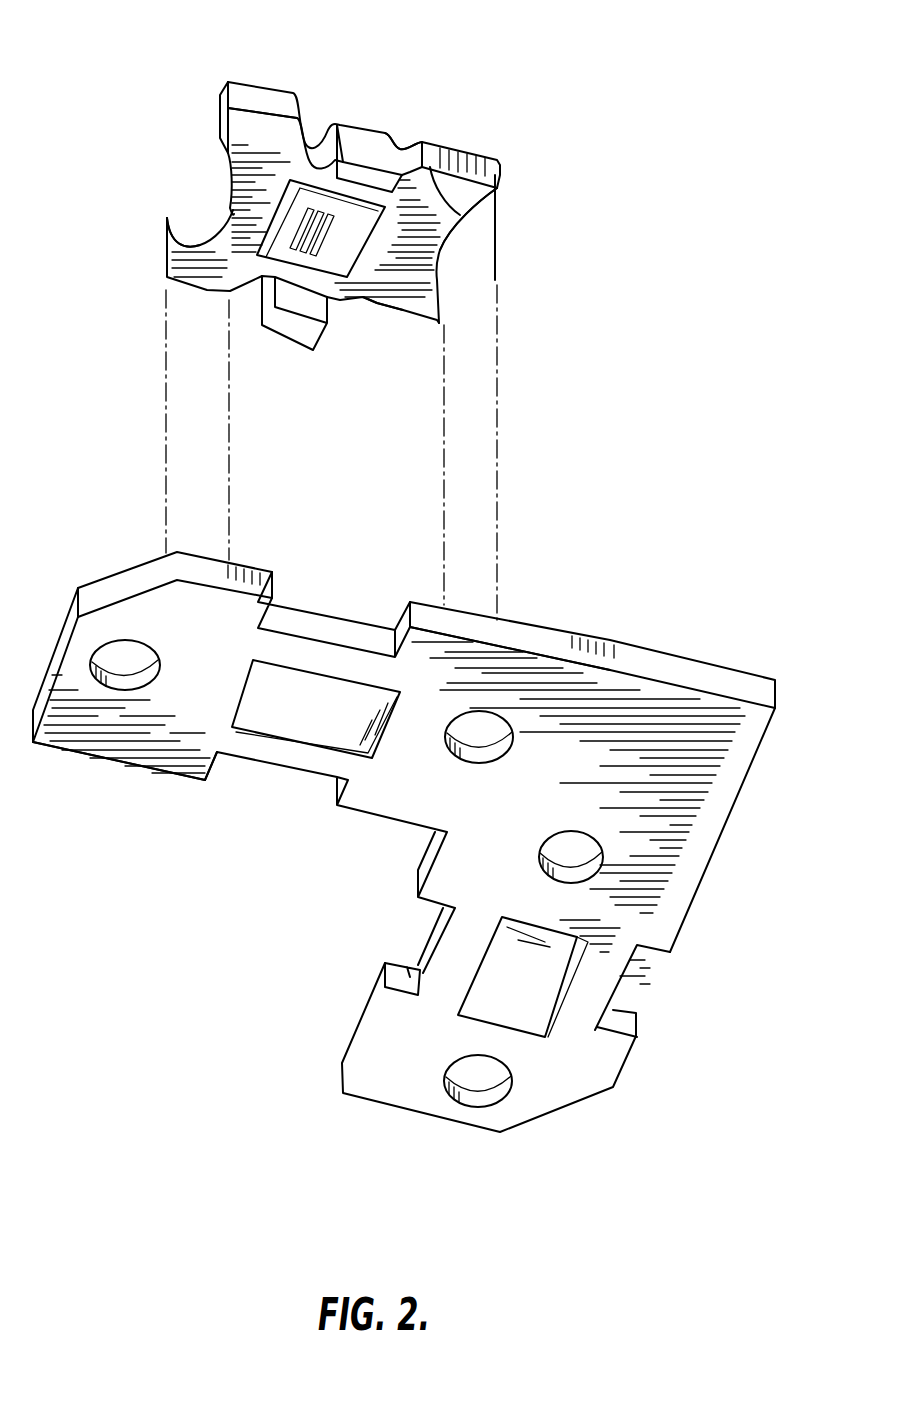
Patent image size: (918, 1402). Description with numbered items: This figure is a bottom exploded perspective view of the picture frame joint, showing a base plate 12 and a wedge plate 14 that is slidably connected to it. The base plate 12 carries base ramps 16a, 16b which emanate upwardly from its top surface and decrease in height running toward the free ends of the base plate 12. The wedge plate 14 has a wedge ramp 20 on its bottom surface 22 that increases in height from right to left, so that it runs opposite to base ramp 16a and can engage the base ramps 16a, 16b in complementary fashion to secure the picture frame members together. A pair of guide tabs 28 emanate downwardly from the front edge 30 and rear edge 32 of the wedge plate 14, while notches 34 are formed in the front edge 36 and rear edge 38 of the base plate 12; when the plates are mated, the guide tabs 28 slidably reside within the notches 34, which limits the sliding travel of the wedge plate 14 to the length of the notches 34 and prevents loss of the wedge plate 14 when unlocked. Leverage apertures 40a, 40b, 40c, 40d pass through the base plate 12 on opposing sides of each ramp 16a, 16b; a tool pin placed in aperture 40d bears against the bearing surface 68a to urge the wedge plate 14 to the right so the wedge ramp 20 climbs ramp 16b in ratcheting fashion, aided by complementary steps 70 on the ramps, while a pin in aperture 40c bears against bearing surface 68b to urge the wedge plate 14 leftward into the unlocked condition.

The base plate 12 is at (702, 677).
The wedge plate 14 is at (455, 153).
The base ramp 16a is at (300, 693).
The base ramp 16b is at (527, 988).
The wedge ramp 20 is at (307, 193).
The bottom surface 22 is at (267, 125).
The guide tabs 28 is at (380, 143).
The front edge 30 is at (460, 215).
The rear edge 32 is at (400, 310).
The notches 34 is at (375, 632).
The front edge 36 is at (420, 652).
The rear edge 38 is at (150, 770).
The leverage aperture 40a is at (125, 653).
The leverage aperture 40b is at (488, 717).
The leverage aperture 40c is at (588, 870).
The leverage aperture 40d is at (487, 1092).
The bearing surface 68a is at (187, 227).
The bearing surface 68b is at (440, 263).
The complementary steps 70 is at (297, 232).